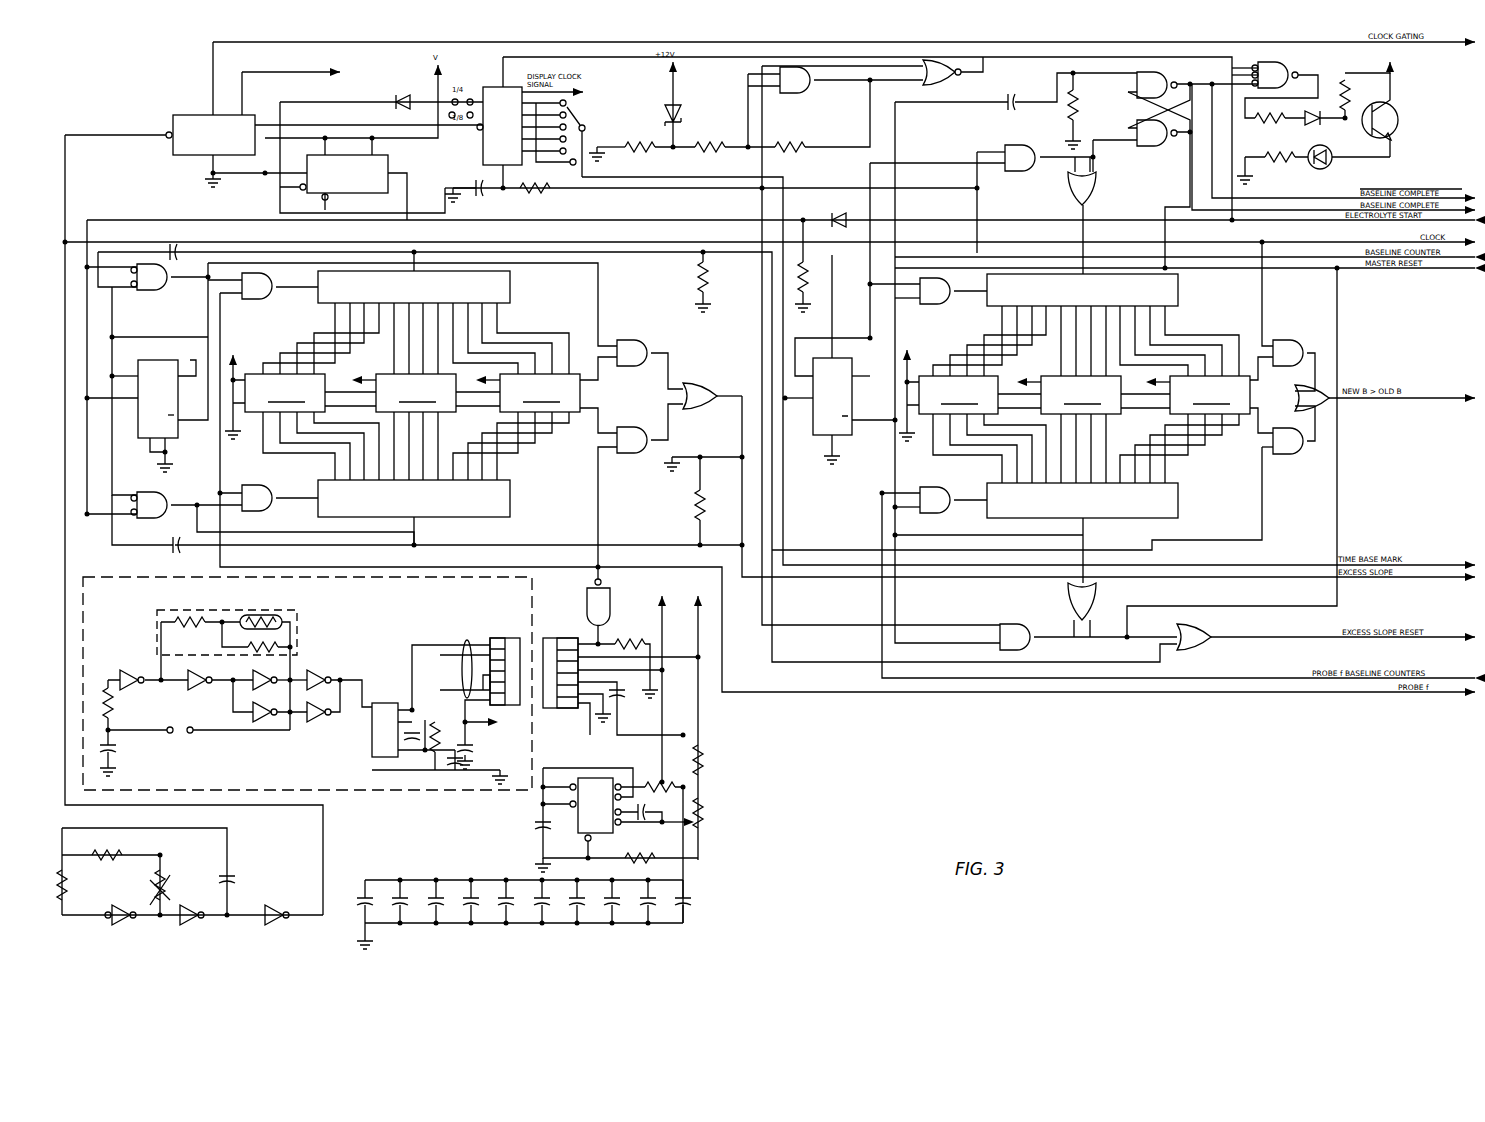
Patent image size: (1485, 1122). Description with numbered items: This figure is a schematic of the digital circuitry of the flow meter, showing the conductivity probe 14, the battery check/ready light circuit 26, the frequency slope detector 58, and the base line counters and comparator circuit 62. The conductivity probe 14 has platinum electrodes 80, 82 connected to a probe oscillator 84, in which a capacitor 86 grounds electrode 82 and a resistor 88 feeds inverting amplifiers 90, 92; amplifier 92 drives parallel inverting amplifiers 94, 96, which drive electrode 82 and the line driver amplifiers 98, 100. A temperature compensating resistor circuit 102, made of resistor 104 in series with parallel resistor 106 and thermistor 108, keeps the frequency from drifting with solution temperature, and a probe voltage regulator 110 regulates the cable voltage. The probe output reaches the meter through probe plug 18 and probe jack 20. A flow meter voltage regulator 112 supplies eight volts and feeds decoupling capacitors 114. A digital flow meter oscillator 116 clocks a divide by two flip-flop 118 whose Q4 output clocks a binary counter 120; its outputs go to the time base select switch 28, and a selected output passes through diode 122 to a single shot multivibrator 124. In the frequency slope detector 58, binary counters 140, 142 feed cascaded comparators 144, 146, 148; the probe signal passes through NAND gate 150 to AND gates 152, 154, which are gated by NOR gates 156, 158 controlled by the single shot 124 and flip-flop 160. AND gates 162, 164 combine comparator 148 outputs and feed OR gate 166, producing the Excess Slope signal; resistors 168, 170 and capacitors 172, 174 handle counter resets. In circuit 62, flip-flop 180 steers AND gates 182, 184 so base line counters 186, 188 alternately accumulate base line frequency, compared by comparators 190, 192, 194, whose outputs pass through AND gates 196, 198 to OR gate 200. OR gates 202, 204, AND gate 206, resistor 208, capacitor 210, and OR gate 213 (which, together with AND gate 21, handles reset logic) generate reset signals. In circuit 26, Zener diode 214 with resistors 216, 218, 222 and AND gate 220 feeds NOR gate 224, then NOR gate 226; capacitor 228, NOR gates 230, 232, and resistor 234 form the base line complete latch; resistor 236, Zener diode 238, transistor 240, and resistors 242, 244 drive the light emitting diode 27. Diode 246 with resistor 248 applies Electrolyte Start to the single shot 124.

The conductivity probe 14 is at (372, 800).
The probe plug 18 is at (493, 636).
The probe jack 20 is at (558, 636).
The AND gate 21 is at (1020, 630).
The battery check/ready light circuit 26 is at (1408, 130).
The light emitting diode 27 is at (1328, 165).
The time base select switch 28 is at (590, 122).
The frequency slope detector 58 is at (622, 300).
The base line counters and comparator circuit 62 is at (1405, 355).
The platinum electrode 80 is at (170, 733).
The platinum electrode 82 is at (191, 733).
The probe oscillator 84 is at (112, 660).
The capacitor 86 is at (115, 750).
The resistor 88 is at (113, 695).
The inverting amplifier 90 is at (148, 667).
The inverting amplifier 92 is at (197, 668).
The inverting amplifier 94 is at (262, 670).
The inverting amplifier 96 is at (250, 712).
The amplifier 98 is at (318, 670).
The amplifier 100 is at (325, 715).
The temperature compensating resistor circuit 102 is at (278, 612).
The resistor 104 is at (165, 618).
The resistor 106 is at (278, 645).
The thermistor 108 is at (245, 612).
The probe voltage regulator 110 is at (340, 763).
The flow meter voltage regulator 112 is at (520, 825).
The decoupling capacitors 114 is at (700, 926).
The digital flow meter oscillator 116 is at (275, 928).
The divide by 2 flip-flop 118 is at (195, 112).
The binary counter 120 is at (490, 86).
The diode 122 is at (404, 93).
The single shot multivibrator 124 is at (368, 178).
The binary counter 140 is at (510, 282).
The binary counter 142 is at (512, 497).
The comparator 144 is at (300, 391).
The comparator 146 is at (438, 393).
The comparator 148 is at (558, 395).
The NAND gate 150 is at (605, 604).
The AND gate 152 is at (258, 298).
The AND gate 154 is at (262, 485).
The NOR gate 156 is at (160, 290).
The NOR gate 158 is at (155, 492).
The flip-flop 160 is at (158, 370).
The AND gate 162 is at (640, 345).
The AND gate 164 is at (640, 452).
The OR gate 166 is at (705, 388).
The resistor 168 is at (708, 270).
The resistor 170 is at (692, 505).
The capacitor 172 is at (176, 243).
The capacitor 174 is at (165, 552).
The flip-flop 180 is at (822, 425).
The AND gate 182 is at (938, 302).
The AND gate 184 is at (935, 508).
The base line counter 186 is at (1178, 290).
The base line counter 188 is at (1178, 502).
The comparator 190 is at (970, 390).
The comparator 192 is at (1105, 395).
The comparator 194 is at (1221, 395).
The AND gate 196 is at (1290, 345).
The AND gate 198 is at (1290, 455).
The OR gate 200 is at (1318, 390).
The OR gate 202 is at (1092, 185).
The OR gate 204 is at (1085, 597).
The AND gate 206 is at (1020, 150).
The resistor 208 is at (540, 190).
The capacitor 210 is at (485, 192).
The OR gate 213 is at (1205, 630).
The Zener diode 214 is at (684, 110).
The resistor 216 is at (640, 150).
The resistor 218 is at (735, 142).
The AND gate 220 is at (800, 88).
The resistor 222 is at (790, 142).
The NOR gate 224 is at (945, 78).
The NOR gate 226 is at (1262, 65).
The capacitor 228 is at (1017, 95).
The NOR gate 230 is at (1168, 74).
The NOR gate 232 is at (1132, 128).
The resistor 234 is at (1077, 90).
The resistor 236 is at (1262, 128).
The Zener diode 238 is at (1315, 105).
The PNP transistor 240 is at (1397, 108).
The resistor 242 is at (1367, 90).
The resistor 244 is at (1266, 170).
The diode 246 is at (830, 212).
The resistor 248 is at (810, 266).